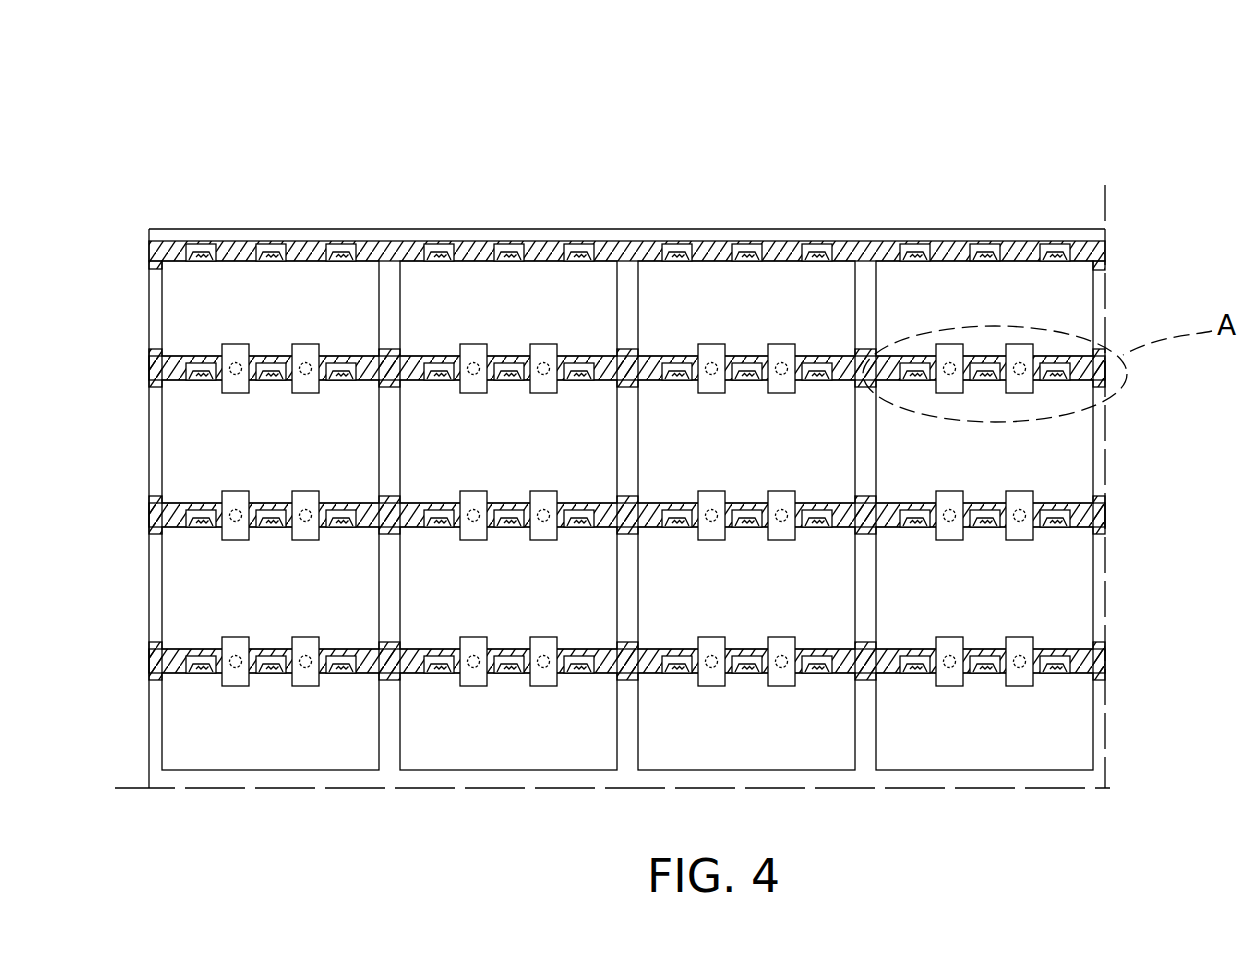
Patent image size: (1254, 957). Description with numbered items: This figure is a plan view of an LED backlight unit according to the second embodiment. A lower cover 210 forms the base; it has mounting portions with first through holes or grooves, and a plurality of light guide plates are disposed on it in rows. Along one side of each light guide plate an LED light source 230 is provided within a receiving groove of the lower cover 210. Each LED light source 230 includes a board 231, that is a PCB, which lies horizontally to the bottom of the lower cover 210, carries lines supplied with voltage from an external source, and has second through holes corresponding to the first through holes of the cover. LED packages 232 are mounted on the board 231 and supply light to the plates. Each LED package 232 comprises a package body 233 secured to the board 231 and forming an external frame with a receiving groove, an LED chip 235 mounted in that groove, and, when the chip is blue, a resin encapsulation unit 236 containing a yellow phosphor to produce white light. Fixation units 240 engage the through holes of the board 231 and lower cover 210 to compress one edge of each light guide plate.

The lower cover 210 is at (1097, 316).
The LED light source 230 is at (638, 145).
The board 231 is at (1088, 243).
The LED package 232 is at (980, 166).
The package body 233 is at (973, 243).
The LED chip 235 is at (984, 258).
The resin encapsulation unit 236 is at (1001, 247).
The fixation unit 240 is at (1033, 394).